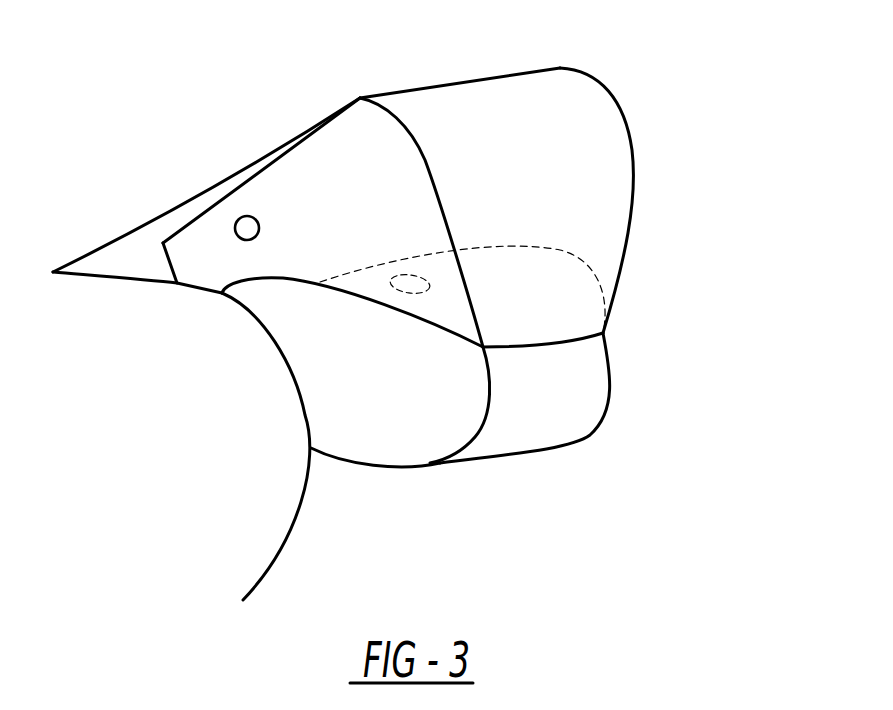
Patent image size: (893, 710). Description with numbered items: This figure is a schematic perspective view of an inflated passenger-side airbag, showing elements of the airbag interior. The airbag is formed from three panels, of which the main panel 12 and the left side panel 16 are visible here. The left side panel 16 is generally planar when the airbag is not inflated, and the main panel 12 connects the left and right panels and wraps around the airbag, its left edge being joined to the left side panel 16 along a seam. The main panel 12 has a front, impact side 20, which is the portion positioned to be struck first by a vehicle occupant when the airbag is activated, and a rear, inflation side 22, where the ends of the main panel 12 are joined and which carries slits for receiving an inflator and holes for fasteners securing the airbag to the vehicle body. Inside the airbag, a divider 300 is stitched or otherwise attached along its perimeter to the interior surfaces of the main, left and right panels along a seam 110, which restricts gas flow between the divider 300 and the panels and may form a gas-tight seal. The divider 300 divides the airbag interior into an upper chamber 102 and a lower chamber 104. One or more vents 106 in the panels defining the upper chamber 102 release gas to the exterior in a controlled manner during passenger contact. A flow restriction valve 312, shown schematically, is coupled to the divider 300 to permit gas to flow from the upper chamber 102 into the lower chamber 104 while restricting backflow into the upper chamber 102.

The main panel 12 is at (487, 90).
The left side panel 16 is at (363, 167).
The front, impact side 20 is at (553, 163).
The rear, inflation side 22 is at (168, 263).
The upper chamber 102 is at (468, 163).
The lower chamber 104 is at (487, 445).
The vent 106 is at (237, 217).
The seam 110 is at (547, 348).
The divider 300 is at (547, 265).
The flow restriction valve 312 is at (430, 289).